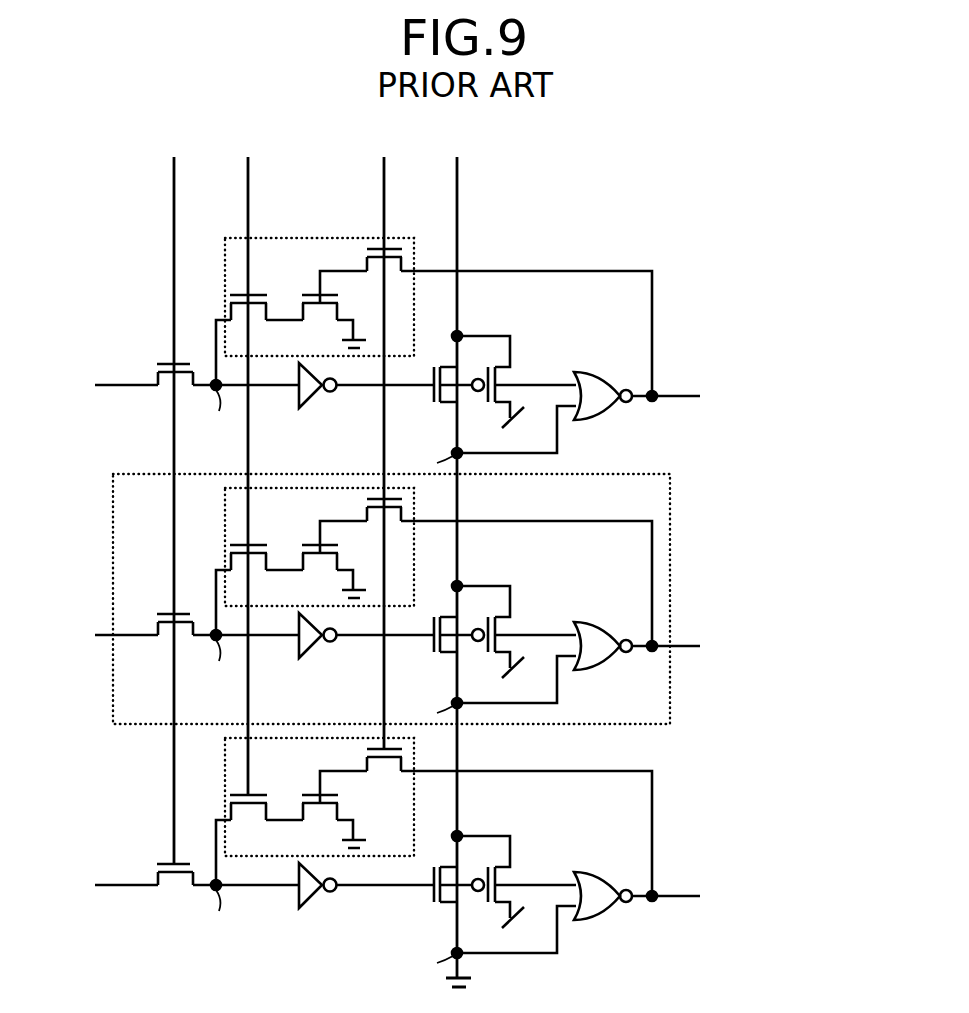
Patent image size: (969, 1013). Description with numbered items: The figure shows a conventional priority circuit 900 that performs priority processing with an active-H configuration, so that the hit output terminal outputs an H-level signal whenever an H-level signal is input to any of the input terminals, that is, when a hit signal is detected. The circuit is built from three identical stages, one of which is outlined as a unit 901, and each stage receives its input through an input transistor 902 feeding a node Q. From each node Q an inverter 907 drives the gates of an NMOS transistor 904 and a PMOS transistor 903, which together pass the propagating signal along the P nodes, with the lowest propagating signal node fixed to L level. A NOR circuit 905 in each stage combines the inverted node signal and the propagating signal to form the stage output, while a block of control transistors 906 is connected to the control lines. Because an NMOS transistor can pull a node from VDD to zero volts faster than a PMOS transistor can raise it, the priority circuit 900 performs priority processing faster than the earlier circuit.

The priority circuit 900 is at (768, 210).
The unit circuit for one row 901 is at (679, 546).
The input transfer transistor 902 is at (165, 863).
The PMOS transistor 903 is at (508, 872).
The NMOS transistor 904 is at (452, 904).
The NOR circuit 905 is at (612, 936).
The control transistor block 906 is at (284, 869).
The inverter 907 is at (324, 918).